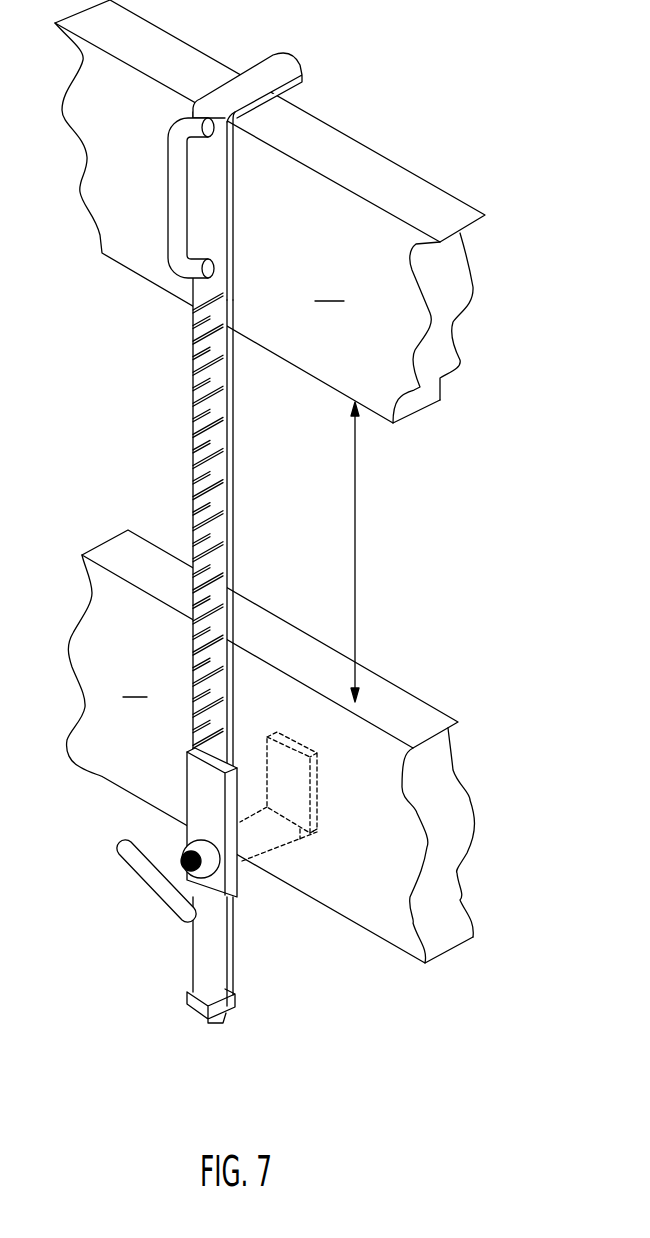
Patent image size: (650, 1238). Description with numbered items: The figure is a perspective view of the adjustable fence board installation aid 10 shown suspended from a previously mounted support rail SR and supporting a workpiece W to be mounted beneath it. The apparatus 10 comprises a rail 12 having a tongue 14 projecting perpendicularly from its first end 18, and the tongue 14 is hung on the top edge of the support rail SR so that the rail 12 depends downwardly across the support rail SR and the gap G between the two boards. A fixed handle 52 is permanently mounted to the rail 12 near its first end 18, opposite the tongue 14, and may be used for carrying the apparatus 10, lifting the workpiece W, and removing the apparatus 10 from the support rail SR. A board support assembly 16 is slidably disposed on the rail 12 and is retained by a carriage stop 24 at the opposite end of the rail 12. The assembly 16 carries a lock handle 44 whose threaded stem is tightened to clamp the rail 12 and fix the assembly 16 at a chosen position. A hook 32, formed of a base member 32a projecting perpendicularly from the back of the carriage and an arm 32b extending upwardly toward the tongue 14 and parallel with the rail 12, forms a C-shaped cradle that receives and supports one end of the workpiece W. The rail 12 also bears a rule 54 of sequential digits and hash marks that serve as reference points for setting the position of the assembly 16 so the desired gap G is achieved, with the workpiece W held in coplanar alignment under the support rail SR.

The adjustable fence board installation aid 10 is at (193, 547).
The rail 12 is at (238, 489).
The tongue 14 is at (247, 84).
The board support assembly 16 is at (166, 796).
The first end 18 is at (235, 150).
The carriage stop 24 is at (210, 1020).
The hook 32 is at (312, 816).
The base member 32a is at (283, 842).
The arm 32b is at (305, 787).
The lock handle 44 is at (145, 877).
The fixed handle 52 is at (168, 235).
The rule 54 is at (198, 456).
The gap G is at (356, 552).
The support rail SR is at (270, 211).
The workpiece W is at (271, 746).